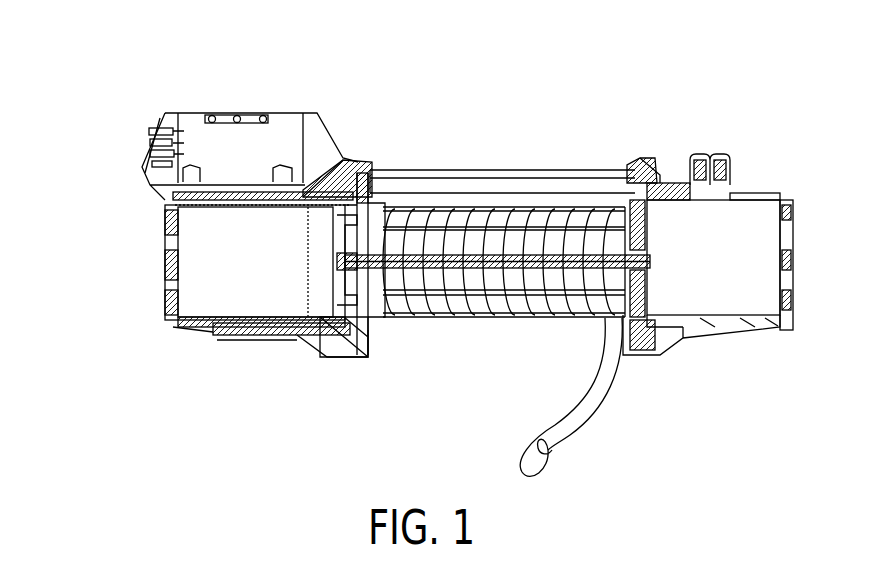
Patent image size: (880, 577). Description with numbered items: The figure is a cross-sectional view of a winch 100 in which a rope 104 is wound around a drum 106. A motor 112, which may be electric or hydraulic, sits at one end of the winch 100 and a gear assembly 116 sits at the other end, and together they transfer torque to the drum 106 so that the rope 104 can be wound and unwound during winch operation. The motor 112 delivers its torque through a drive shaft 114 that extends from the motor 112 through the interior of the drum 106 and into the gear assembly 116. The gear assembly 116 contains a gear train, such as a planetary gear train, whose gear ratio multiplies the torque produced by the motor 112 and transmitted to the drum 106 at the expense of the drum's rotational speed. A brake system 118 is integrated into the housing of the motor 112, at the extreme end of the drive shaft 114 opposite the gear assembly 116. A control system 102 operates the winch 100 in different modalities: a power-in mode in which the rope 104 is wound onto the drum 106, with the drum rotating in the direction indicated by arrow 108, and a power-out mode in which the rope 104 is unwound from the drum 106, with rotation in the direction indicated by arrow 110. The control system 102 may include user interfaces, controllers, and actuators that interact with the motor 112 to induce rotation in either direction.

The winch 100 is at (205, 91).
The control system 102 is at (122, 150).
The rope 104 is at (592, 408).
The drum 106 is at (500, 214).
The arrow 108 is at (577, 322).
The arrow 110 is at (412, 330).
The motor 112 is at (200, 292).
The drive shaft 114 is at (492, 277).
The gear assembly 116 is at (710, 224).
The brake system 118 is at (316, 322).